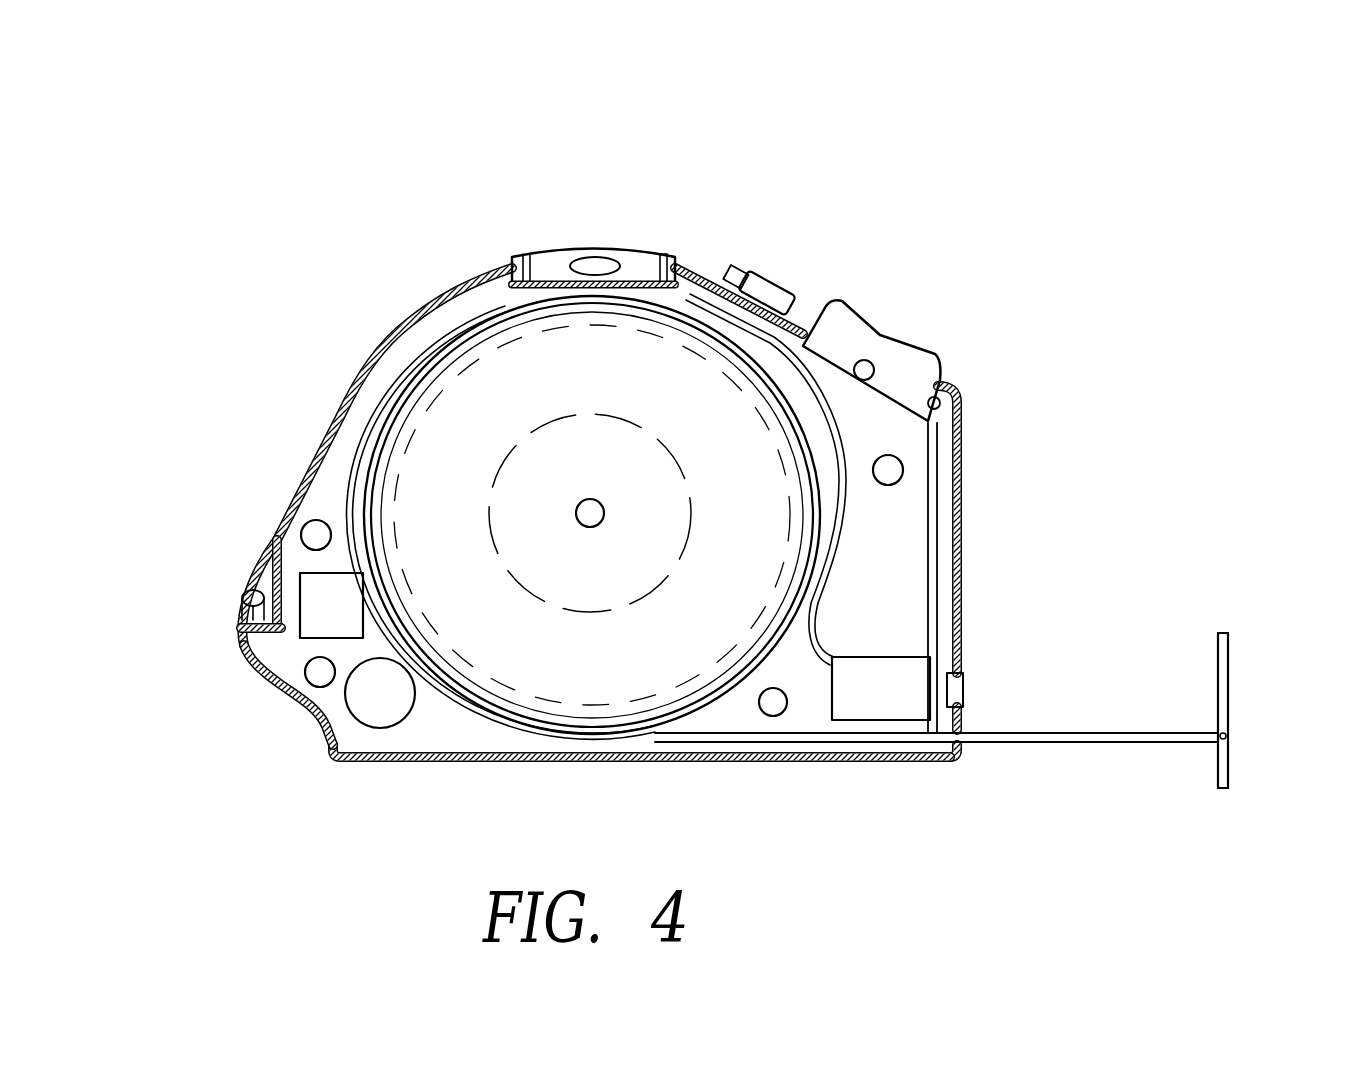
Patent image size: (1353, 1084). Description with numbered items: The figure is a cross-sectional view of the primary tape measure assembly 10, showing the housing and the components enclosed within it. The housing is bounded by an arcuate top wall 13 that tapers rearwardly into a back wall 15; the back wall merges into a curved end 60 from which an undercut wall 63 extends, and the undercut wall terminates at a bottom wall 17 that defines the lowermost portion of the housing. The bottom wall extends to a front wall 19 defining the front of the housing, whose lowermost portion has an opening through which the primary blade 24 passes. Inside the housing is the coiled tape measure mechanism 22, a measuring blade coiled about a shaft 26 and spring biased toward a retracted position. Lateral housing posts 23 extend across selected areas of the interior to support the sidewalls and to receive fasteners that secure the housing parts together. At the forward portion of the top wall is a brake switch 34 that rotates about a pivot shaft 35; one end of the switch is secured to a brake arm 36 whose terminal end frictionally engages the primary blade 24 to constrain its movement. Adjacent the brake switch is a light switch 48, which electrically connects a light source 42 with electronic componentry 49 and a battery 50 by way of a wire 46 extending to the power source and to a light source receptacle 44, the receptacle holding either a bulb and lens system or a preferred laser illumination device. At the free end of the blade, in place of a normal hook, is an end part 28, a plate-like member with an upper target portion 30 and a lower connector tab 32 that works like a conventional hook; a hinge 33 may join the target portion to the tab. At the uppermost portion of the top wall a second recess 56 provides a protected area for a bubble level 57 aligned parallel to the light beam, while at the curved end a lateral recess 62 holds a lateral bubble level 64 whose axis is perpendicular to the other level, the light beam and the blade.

The primary tape measure assembly 10 is at (992, 298).
The arcuate top wall 13 is at (556, 250).
The back wall 15 is at (333, 418).
The bottom wall 17 is at (396, 763).
The front wall 19 is at (964, 446).
The coiled tape measure mechanism 22 is at (420, 380).
The lateral housing posts 23 is at (314, 528).
The primary blade 24 is at (1130, 744).
The shaft 26 is at (590, 502).
The end part 28 is at (1232, 620).
The upper target portion 30 is at (1229, 645).
The lower connector tab 32 is at (1229, 778).
The hinge 33 is at (1229, 735).
The brake switch 34 is at (898, 370).
The pivot shaft 35 is at (861, 361).
The brake arm 36 is at (935, 565).
The light source 42 is at (956, 690).
The light source receptacle 44 is at (905, 702).
The wire 46 is at (373, 398).
The light switch 48 is at (773, 278).
The electronic componentry 49 is at (352, 595).
The battery 50 is at (387, 677).
The second recess 56 is at (652, 252).
The bubble level 57 is at (592, 260).
The curved end 60 is at (243, 636).
The lateral recess 62 is at (272, 560).
The undercut wall 63 is at (313, 731).
The lateral bubble level 64 is at (249, 594).